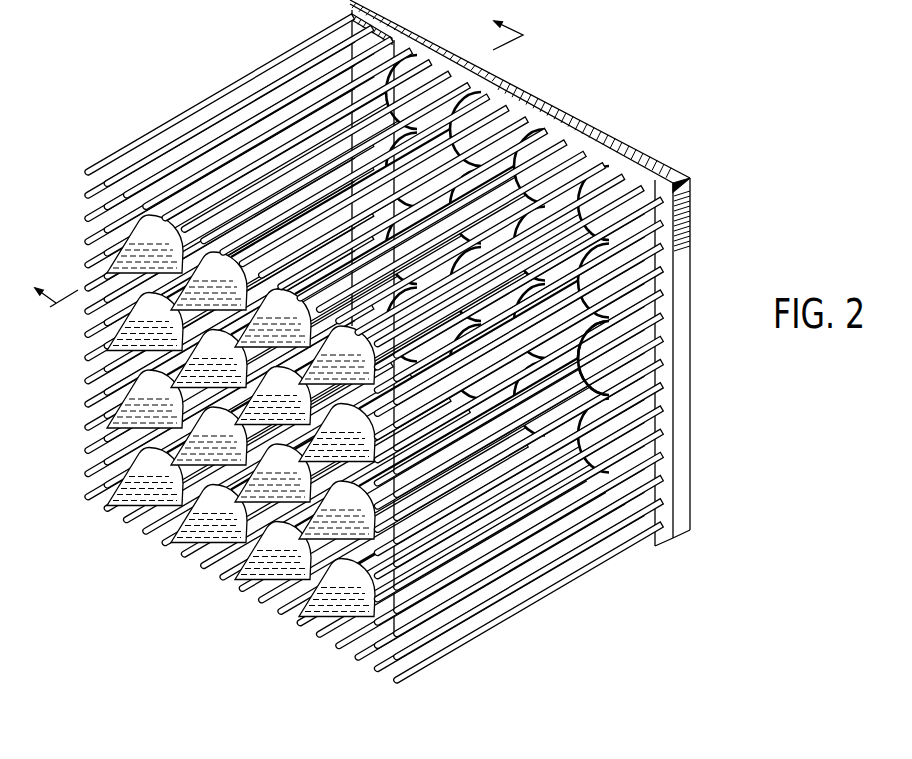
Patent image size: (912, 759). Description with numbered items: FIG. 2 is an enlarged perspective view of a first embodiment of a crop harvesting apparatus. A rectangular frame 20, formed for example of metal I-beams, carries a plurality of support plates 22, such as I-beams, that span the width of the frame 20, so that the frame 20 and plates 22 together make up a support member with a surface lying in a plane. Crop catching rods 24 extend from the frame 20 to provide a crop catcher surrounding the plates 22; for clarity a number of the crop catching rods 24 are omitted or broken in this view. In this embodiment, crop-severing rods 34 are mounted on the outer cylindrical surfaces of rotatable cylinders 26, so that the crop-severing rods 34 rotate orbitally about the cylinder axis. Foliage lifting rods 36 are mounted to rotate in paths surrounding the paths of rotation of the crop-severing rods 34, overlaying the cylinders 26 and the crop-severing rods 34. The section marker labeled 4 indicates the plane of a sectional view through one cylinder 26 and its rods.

The rectangular frame 20 is at (603, 143).
The support plates 22 is at (668, 253).
The crop catching rods 24 is at (405, 346).
The rotatable cylinders 26 is at (477, 117).
The crop-severing rods 34 is at (662, 376).
The foliage lifting rods 36 is at (607, 328).
The section line 4- 4 is at (278, 154).